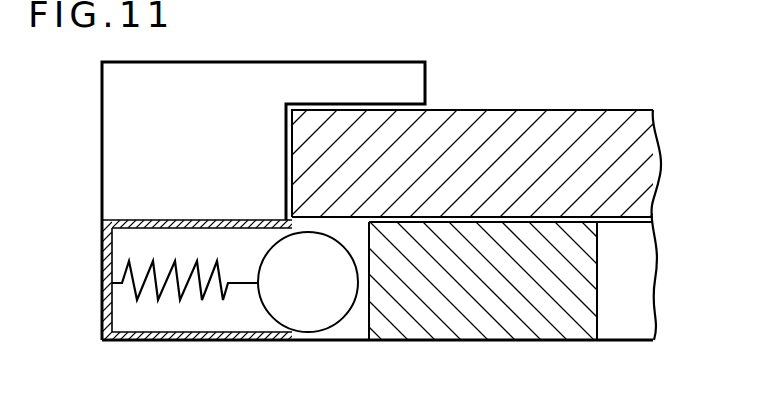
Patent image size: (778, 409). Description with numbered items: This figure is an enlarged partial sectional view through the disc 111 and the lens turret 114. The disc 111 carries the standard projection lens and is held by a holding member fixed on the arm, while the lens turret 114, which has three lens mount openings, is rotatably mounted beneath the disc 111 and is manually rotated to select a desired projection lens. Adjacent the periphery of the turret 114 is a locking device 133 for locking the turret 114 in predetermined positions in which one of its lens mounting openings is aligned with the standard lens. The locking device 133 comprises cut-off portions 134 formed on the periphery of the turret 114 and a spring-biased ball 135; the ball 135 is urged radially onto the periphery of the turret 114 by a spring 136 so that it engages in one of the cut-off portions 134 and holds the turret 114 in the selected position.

The disc 111 is at (522, 118).
The lens turret 114 is at (487, 328).
The locking device 133 is at (246, 59).
The cut-off portion 134 is at (357, 325).
The ball 135 is at (318, 307).
The spring 136 is at (202, 292).